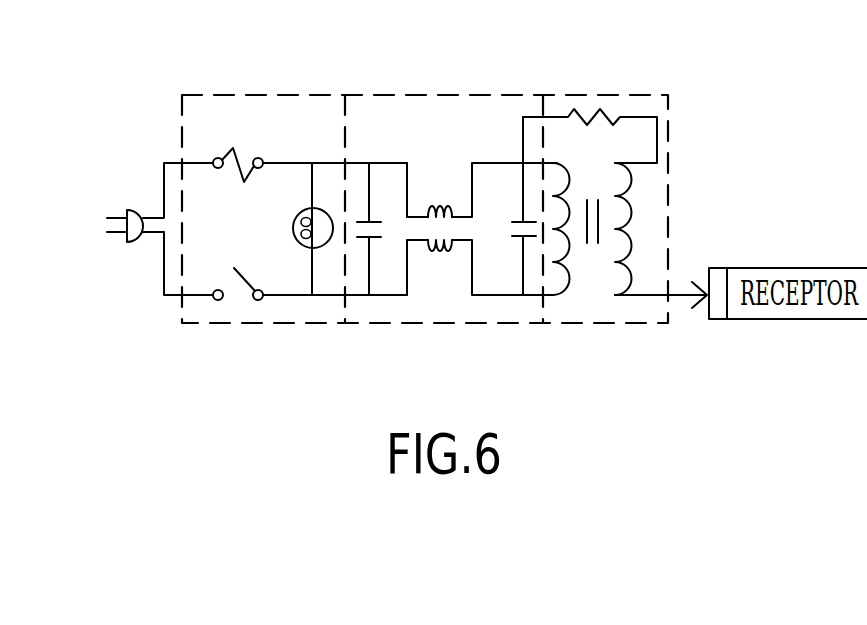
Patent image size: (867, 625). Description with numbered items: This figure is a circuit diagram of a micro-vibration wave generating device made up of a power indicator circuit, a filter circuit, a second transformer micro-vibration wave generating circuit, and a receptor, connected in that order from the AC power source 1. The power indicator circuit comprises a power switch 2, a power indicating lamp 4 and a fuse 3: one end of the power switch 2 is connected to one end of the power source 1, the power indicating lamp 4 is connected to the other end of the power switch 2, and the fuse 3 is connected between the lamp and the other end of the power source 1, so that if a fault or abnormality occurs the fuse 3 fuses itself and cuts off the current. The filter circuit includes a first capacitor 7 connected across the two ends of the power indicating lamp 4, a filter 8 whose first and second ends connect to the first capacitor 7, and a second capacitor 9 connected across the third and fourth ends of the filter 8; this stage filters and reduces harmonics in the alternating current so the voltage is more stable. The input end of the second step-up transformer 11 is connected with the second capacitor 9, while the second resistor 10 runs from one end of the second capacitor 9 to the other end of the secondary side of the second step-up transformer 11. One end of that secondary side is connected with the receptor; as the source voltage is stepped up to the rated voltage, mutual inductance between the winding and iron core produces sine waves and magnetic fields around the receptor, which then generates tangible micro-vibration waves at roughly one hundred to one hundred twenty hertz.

The power source 1 is at (138, 212).
The power switch 2 is at (257, 302).
The fuse 3 is at (257, 156).
The power indicating lamp 4 is at (315, 250).
The first capacitor 7 is at (376, 240).
The filter 8 is at (441, 260).
The second capacitor 9 is at (527, 240).
The second resistor 10 is at (620, 117).
The second step-up transformer 11 is at (615, 292).